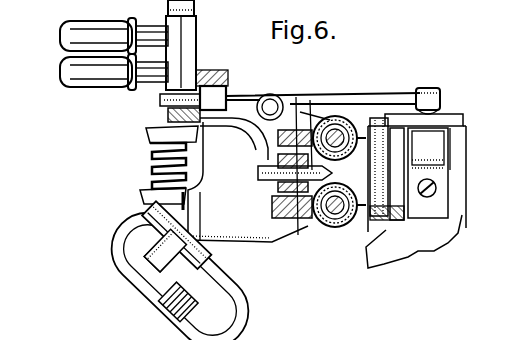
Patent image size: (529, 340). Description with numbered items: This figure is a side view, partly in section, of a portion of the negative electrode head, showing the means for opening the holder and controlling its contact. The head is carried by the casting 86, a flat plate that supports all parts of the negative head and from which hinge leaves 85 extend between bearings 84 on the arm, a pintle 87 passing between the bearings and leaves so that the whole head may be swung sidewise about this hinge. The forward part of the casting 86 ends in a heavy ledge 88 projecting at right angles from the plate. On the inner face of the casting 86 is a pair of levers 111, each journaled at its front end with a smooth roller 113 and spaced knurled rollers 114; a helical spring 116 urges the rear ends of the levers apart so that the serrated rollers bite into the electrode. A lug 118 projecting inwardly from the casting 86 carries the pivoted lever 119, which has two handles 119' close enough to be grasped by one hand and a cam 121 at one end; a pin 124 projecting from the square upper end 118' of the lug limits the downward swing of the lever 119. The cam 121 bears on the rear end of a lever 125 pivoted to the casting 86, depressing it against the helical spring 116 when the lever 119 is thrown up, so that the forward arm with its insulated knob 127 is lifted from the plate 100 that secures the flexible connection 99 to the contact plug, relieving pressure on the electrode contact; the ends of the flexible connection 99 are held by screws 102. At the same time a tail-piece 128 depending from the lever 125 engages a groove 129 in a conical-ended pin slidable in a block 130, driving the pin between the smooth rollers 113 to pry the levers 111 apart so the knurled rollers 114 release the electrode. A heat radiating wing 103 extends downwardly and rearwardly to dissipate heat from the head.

The lever 119 is at (146, 45).
The handles 119' is at (114, 87).
The pin 124 is at (160, 99).
The cam 121 is at (168, 116).
The lug 118 is at (215, 80).
The square upper end 118' is at (323, 94).
The lever 125 is at (340, 98).
The insulated knob 127 is at (426, 88).
The levers 111 is at (298, 97).
The smooth roller 113 is at (355, 122).
The knurled rollers 114 is at (356, 132).
The tail-piece 128 is at (278, 140).
The groove 129 is at (258, 172).
The block 130 is at (274, 196).
The casting 86 is at (248, 180).
The helical spring 116 is at (152, 164).
The plate 100 is at (448, 126).
The ledge 88 is at (380, 178).
The flexible connection 99 is at (429, 173).
The screws 102 is at (430, 197).
The heat radiating wing 103 is at (414, 241).
The bearings 84 is at (126, 225).
The hinge leaves 85 is at (150, 250).
The pintle 87 is at (160, 292).